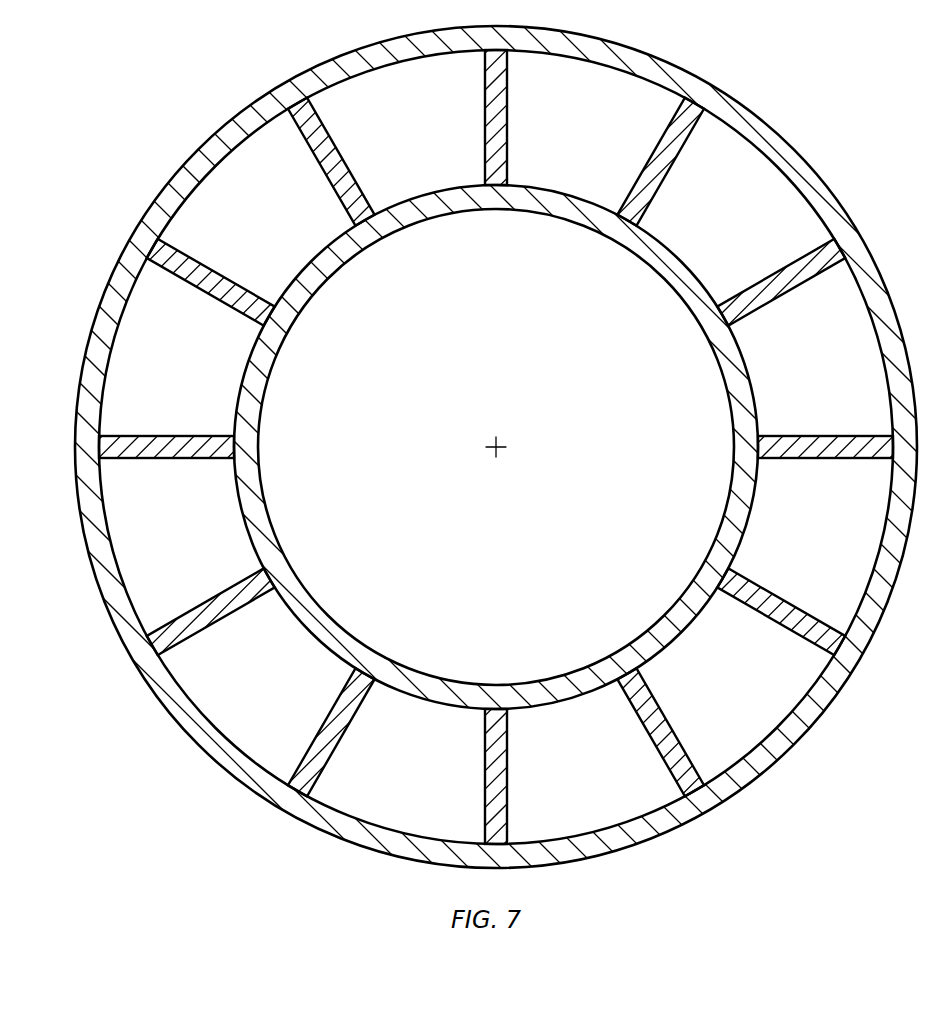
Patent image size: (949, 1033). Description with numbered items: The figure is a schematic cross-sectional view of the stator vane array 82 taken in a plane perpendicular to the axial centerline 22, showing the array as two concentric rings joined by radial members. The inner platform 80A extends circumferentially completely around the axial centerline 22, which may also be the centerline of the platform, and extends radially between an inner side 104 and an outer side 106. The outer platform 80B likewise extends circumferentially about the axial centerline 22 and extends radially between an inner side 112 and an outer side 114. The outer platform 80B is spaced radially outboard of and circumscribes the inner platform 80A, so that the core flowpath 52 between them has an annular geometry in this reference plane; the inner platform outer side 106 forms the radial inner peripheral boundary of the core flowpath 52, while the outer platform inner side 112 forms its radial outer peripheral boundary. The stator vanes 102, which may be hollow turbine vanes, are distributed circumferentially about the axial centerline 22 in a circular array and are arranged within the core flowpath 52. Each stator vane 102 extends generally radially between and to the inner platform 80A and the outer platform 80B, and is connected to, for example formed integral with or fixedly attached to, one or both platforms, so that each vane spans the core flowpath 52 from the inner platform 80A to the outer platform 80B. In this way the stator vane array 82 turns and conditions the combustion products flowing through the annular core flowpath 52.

The axial centerline 22 is at (502, 452).
The core flowpath 52 is at (191, 371).
The inner platform 80A is at (661, 283).
The outer platform 80B is at (803, 145).
The stator vane array 82 is at (146, 112).
The stator vanes 102 is at (632, 170).
The inner side of the inner platform 104 is at (447, 206).
The outer side of the inner platform 106 is at (442, 213).
The inner side of the outer platform 112 is at (395, 63).
The outer side of the outer platform 114 is at (318, 60).